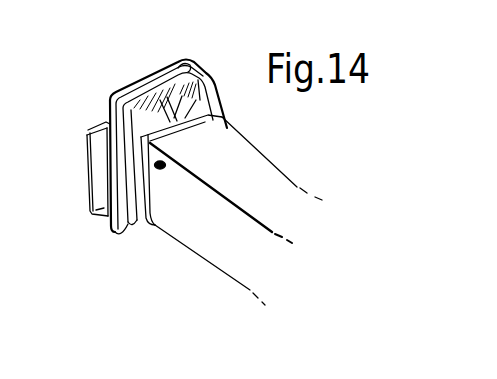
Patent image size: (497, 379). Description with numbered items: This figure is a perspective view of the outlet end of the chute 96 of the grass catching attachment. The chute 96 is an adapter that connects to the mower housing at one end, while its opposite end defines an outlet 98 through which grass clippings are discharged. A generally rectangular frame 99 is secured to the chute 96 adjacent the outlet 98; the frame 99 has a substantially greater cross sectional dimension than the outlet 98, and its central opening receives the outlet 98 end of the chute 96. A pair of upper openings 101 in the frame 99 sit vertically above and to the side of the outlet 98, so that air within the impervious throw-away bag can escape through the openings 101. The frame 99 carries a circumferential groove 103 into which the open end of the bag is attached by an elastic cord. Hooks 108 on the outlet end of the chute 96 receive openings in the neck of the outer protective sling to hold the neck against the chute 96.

The chute 96 is at (263, 162).
The outlet 98 is at (88, 172).
The frame 99 is at (207, 70).
The upper openings 101 is at (153, 100).
The circumferential groove 103 is at (182, 63).
The hooks 108 is at (165, 161).